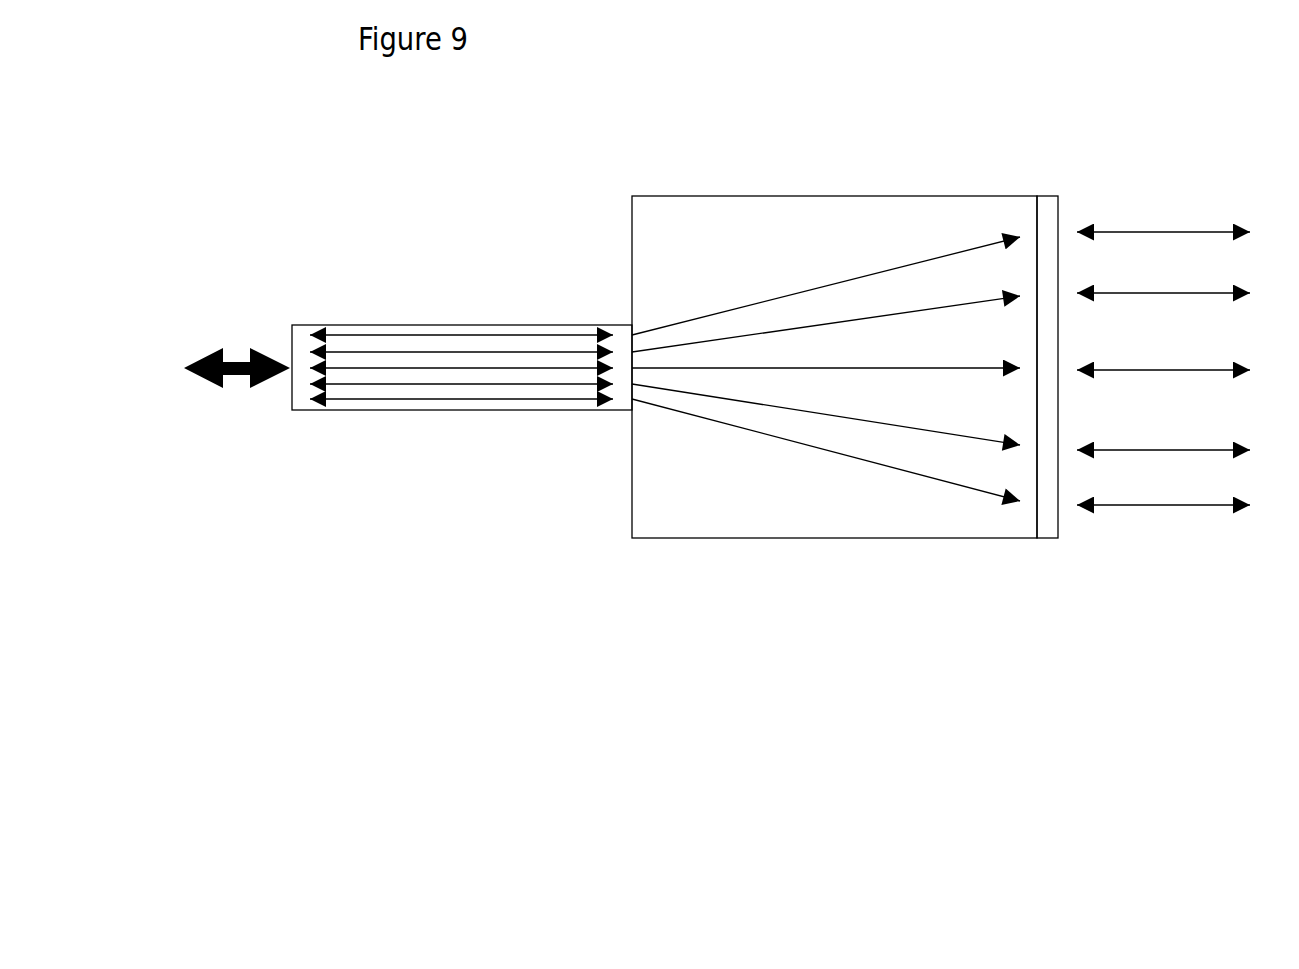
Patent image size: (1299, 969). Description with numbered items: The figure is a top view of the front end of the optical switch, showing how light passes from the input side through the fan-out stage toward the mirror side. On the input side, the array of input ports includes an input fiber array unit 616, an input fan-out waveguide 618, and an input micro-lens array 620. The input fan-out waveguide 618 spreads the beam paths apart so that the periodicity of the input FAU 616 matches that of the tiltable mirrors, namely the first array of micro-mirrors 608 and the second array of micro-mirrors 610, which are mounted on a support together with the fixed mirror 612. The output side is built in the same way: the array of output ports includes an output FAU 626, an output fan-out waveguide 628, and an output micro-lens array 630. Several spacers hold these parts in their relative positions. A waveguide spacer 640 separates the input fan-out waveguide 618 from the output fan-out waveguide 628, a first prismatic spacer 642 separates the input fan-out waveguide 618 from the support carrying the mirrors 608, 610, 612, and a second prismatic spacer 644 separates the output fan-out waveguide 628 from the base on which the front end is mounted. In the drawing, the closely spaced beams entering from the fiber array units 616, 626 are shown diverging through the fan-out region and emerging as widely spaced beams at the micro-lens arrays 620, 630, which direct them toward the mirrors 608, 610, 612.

The input fiber array unit (FAU) 616 is at (437, 273).
The output fiber array unit (FAU) 626 is at (395, 318).
The first prismatic spacer 642 is at (834, 521).
The input fan-out waveguide 618 is at (834, 521).
The waveguide spacer 640 is at (834, 521).
The output fan-out waveguide 628 is at (834, 521).
The second prismatic spacer 644 is at (680, 538).
The second array of micro-mirrors 610 is at (1143, 545).
The first array of micro-mirrors 608 is at (1143, 545).
The fixed mirror 612 is at (1143, 545).
The input micro-lens array 620 is at (1143, 545).
The output micro-lens array 630 is at (1048, 538).